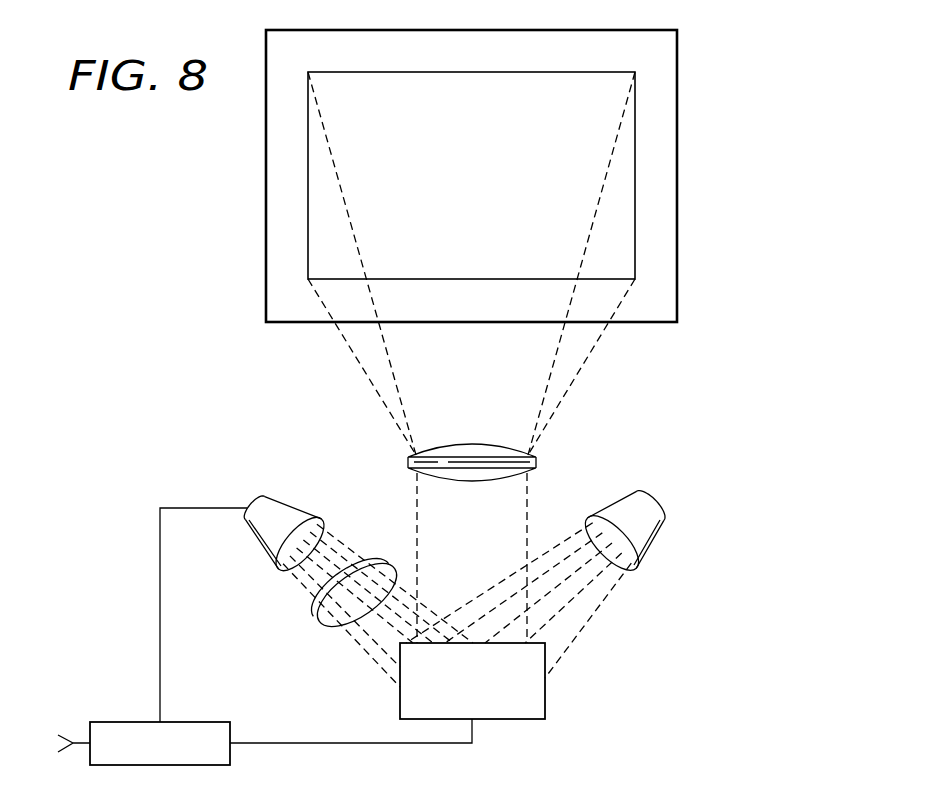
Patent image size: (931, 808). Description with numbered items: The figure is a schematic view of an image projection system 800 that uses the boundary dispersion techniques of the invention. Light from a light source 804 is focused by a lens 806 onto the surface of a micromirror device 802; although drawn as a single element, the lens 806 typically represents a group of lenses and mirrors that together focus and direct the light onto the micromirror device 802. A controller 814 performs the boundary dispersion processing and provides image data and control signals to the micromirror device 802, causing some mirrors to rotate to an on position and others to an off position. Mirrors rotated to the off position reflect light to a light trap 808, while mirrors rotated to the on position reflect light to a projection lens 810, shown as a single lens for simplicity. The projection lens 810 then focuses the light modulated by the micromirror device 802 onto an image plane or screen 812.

The image projection system 800 is at (732, 78).
The micromirror device 802 is at (452, 692).
The light source 804 is at (295, 510).
The lens 806 is at (318, 632).
The light trap 808 is at (649, 507).
The projection lens 810 is at (539, 462).
The screen 812 is at (266, 176).
The controller 814 is at (122, 722).